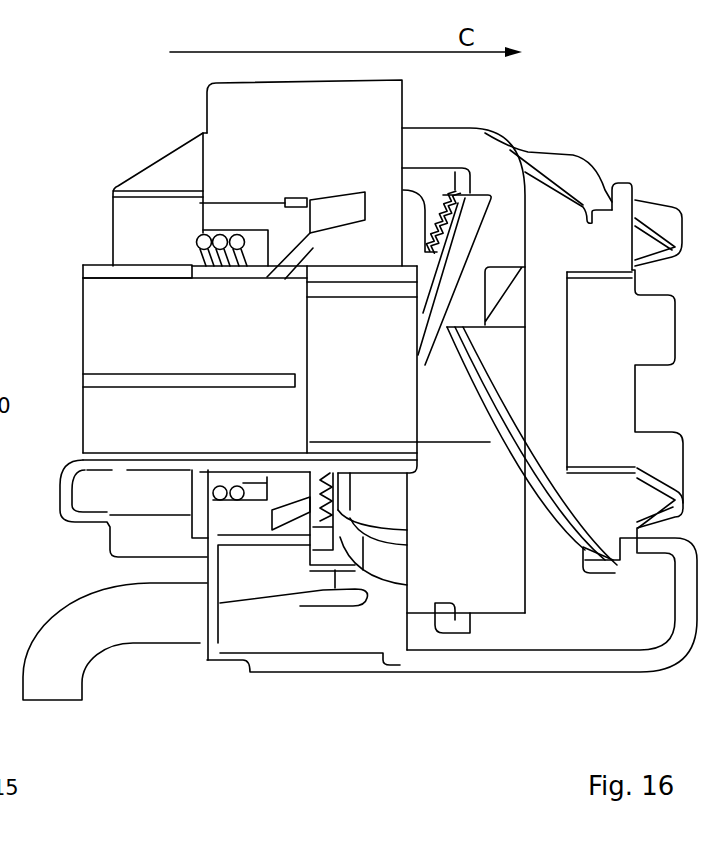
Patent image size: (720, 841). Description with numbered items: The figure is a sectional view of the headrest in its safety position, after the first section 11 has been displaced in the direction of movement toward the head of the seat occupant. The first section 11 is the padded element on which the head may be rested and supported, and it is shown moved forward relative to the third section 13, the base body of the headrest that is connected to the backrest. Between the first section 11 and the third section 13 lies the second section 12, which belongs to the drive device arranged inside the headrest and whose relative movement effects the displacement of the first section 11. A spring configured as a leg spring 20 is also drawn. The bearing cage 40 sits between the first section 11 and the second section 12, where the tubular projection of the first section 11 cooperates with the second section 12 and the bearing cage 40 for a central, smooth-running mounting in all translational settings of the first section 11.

The first section 11 is at (615, 500).
The second section 12 is at (453, 553).
The third section 13 is at (282, 628).
The leg spring 20 is at (197, 227).
The bearing cage 40 is at (352, 352).